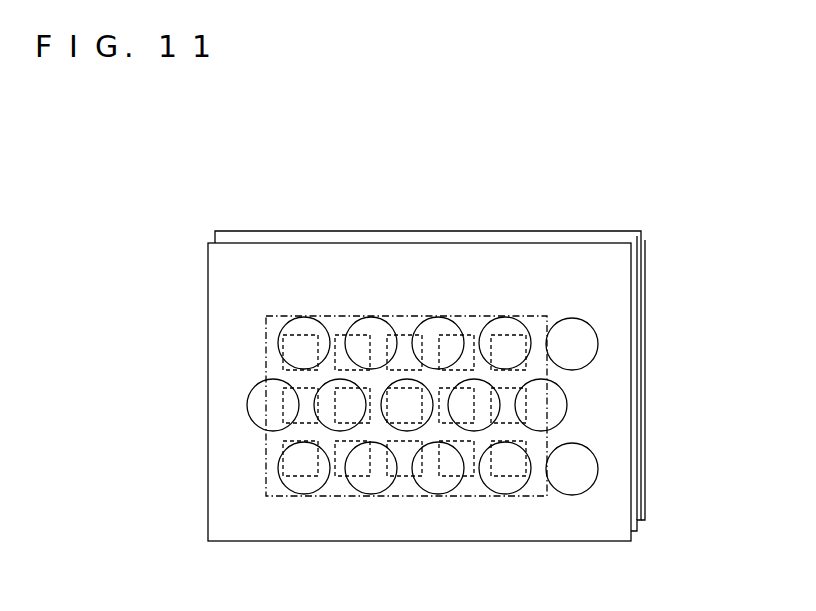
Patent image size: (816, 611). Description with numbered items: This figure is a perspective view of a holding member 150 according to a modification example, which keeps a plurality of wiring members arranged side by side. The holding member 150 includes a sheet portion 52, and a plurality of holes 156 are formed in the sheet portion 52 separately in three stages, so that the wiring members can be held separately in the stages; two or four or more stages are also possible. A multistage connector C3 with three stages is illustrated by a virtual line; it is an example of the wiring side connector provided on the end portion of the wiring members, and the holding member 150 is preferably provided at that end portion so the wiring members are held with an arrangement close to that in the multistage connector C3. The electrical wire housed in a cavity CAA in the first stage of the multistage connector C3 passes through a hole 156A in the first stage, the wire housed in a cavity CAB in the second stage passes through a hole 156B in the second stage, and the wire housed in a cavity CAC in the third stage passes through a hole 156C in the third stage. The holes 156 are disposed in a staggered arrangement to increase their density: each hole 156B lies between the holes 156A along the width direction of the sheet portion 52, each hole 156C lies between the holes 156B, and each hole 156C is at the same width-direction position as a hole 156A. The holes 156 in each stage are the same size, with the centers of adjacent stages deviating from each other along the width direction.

The holding member 150 is at (242, 227).
The sheet portion 52 is at (609, 281).
The multistage connector C3 is at (392, 316).
The cavity in a first stage CAA is at (278, 362).
The cavity in a second stage CAB is at (284, 423).
The cavity in a third stage CAC is at (280, 468).
The holes 156 is at (734, 335).
The hole in a first stage 156A is at (598, 352).
The hole in a second stage 156B is at (568, 414).
The hole in a third stage 156C is at (598, 476).